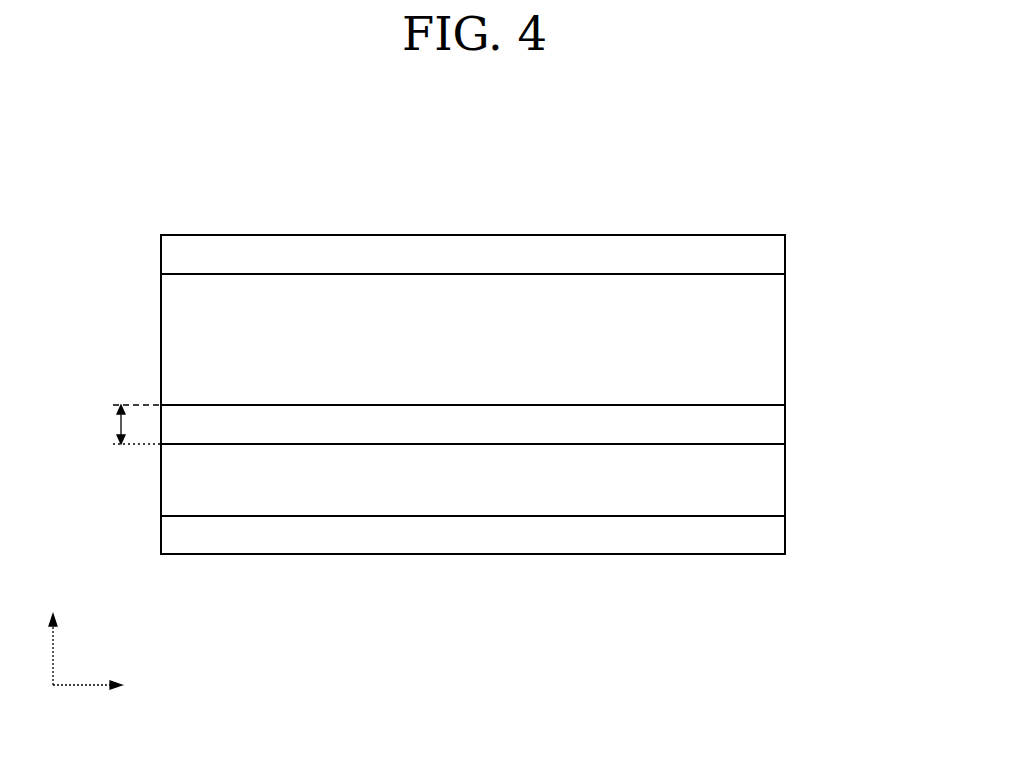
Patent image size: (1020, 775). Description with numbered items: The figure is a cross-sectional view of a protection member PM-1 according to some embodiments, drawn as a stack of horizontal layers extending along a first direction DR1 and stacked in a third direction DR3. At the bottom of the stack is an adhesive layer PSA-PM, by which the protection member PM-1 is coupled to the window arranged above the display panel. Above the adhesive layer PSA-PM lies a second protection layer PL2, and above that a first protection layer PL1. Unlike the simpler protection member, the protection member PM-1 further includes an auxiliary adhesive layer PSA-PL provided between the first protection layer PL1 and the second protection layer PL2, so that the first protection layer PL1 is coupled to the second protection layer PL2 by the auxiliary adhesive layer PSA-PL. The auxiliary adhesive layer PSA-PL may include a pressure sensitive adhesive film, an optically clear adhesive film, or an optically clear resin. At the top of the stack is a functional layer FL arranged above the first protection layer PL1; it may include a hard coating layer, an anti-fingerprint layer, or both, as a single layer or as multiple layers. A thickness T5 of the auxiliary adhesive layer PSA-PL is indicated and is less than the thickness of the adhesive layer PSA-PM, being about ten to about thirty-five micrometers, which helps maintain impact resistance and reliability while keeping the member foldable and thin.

The protection member PM-1 is at (702, 178).
The functional layer FL is at (773, 261).
The first protection layer PL1 is at (773, 347).
The auxiliary adhesive layer PSA-PL is at (773, 431).
The second protection layer PL2 is at (773, 487).
The adhesive layer PSA-PM is at (773, 541).
The thickness of auxiliary adhesive layer T5 is at (124, 424).
The first direction DR1 is at (109, 684).
The third direction DR3 is at (54, 635).